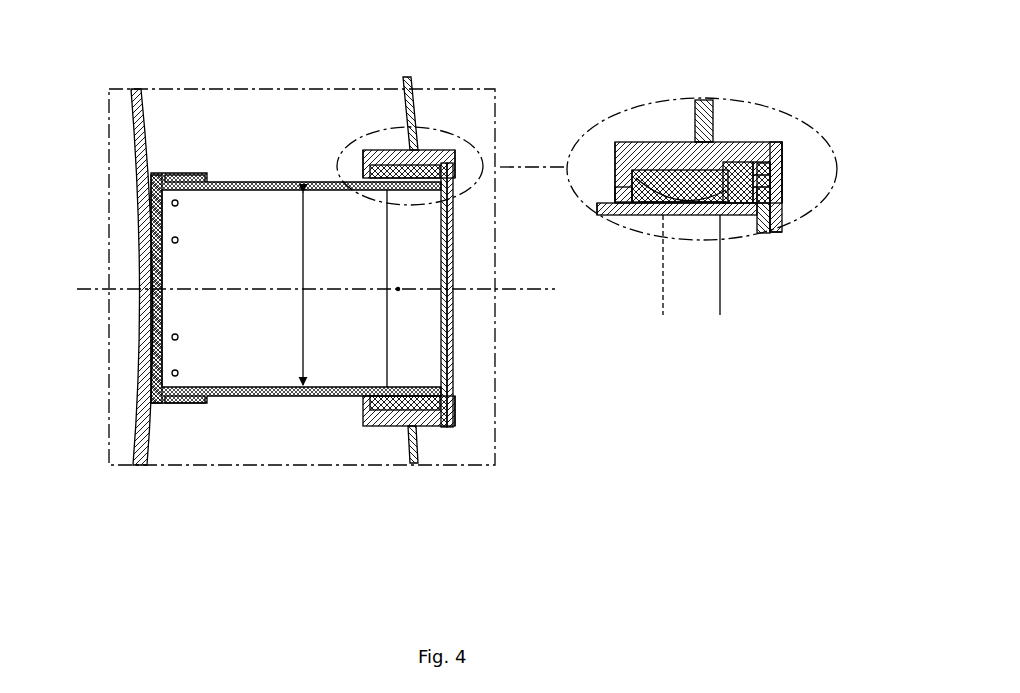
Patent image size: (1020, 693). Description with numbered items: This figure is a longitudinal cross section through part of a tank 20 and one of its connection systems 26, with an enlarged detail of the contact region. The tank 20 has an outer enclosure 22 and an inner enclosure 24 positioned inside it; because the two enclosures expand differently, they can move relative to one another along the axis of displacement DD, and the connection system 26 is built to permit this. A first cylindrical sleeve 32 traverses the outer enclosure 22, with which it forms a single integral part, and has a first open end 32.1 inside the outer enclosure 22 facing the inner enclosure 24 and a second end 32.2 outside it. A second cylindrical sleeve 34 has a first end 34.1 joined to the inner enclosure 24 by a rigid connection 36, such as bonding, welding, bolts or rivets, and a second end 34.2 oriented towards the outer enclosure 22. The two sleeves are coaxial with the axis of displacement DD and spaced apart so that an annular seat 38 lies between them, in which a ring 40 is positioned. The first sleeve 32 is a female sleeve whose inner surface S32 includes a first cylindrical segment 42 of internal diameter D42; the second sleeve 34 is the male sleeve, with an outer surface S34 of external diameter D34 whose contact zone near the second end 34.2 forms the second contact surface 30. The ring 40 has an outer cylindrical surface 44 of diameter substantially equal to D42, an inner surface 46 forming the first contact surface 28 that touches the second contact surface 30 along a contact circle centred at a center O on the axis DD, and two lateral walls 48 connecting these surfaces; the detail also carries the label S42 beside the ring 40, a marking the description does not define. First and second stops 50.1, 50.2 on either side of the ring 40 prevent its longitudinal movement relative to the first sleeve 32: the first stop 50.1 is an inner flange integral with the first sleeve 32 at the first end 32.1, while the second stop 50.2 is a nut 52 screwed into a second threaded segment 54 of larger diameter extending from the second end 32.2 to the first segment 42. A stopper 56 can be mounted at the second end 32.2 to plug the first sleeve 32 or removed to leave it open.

The tank 20 is at (453, 74).
The outer enclosure 22 is at (407, 78).
The inner enclosure 24 is at (134, 80).
The connection system 26 is at (254, 78).
The first contact surface 28 is at (409, 378).
The second contact surface 30 is at (383, 426).
The first cylindrical sleeve 32 is at (387, 146).
The first open end 32.1 is at (360, 158).
The second end 32.2 is at (455, 155).
The second cylindrical sleeve 34 is at (267, 404).
The first end 34.1 is at (148, 225).
The second end 34.2 is at (447, 355).
The rigid connection 36 is at (190, 406).
The annular seat 38 is at (798, 228).
The ring 40 is at (400, 420).
The first cylindrical segment 42 is at (650, 208).
The outer cylindrical surface 44 is at (703, 130).
The inner surface 46 is at (672, 215).
The lateral walls 48 is at (616, 190).
The first stop 50.1 is at (597, 210).
The second stop 50.2 is at (783, 190).
The nut 52 is at (437, 426).
The second threaded segment 54 is at (456, 404).
The stopper 56 is at (786, 236).
The inner surface S32 is at (718, 219).
The outer surface S34 is at (342, 400).
The thickness of inner ring S42 is at (617, 189).
The external diameter D34 is at (510, 288).
The internal diameter D42 is at (523, 288).
The axis of displacement DD is at (513, 289).
The center O is at (407, 284).